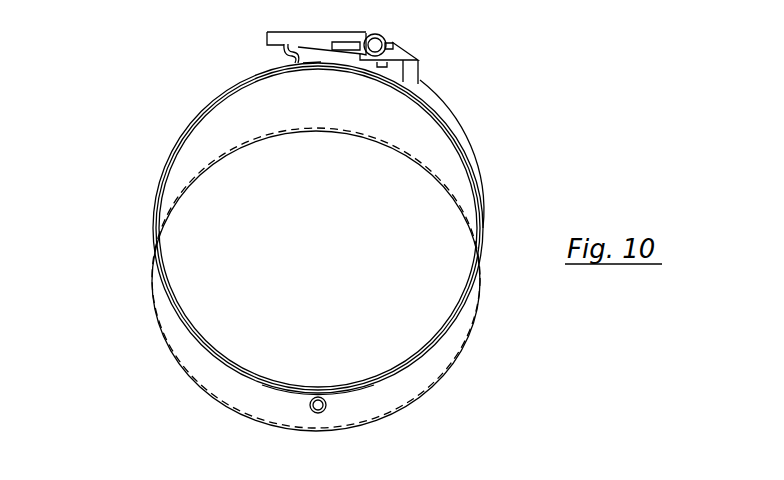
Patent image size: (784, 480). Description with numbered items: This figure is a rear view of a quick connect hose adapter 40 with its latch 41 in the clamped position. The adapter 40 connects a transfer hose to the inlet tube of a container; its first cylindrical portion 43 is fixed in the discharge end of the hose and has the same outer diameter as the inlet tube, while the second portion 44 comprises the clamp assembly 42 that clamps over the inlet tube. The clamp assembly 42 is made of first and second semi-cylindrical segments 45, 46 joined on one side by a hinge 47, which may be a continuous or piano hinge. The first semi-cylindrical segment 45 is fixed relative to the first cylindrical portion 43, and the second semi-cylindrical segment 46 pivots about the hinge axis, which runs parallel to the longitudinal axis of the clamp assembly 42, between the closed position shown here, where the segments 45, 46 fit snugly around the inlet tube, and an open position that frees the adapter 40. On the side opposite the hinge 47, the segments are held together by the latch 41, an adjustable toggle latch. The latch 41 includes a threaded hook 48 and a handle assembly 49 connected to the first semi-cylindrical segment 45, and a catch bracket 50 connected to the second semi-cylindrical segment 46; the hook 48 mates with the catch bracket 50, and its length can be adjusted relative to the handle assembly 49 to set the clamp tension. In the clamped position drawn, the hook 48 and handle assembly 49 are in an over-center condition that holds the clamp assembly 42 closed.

The quick connect hose adapter 40 is at (158, 352).
The latch 41 is at (397, 52).
The clamp assembly 42 is at (218, 95).
The first cylindrical portion 43 is at (158, 317).
The second portion 44 is at (475, 170).
The first semi-cylindrical segment 45 is at (463, 137).
The second semi-cylindrical segment 46 is at (163, 166).
The hinge 47 is at (312, 411).
The threaded hook 48 is at (283, 49).
The handle assembly 49 is at (267, 32).
The catch bracket 50 is at (280, 60).